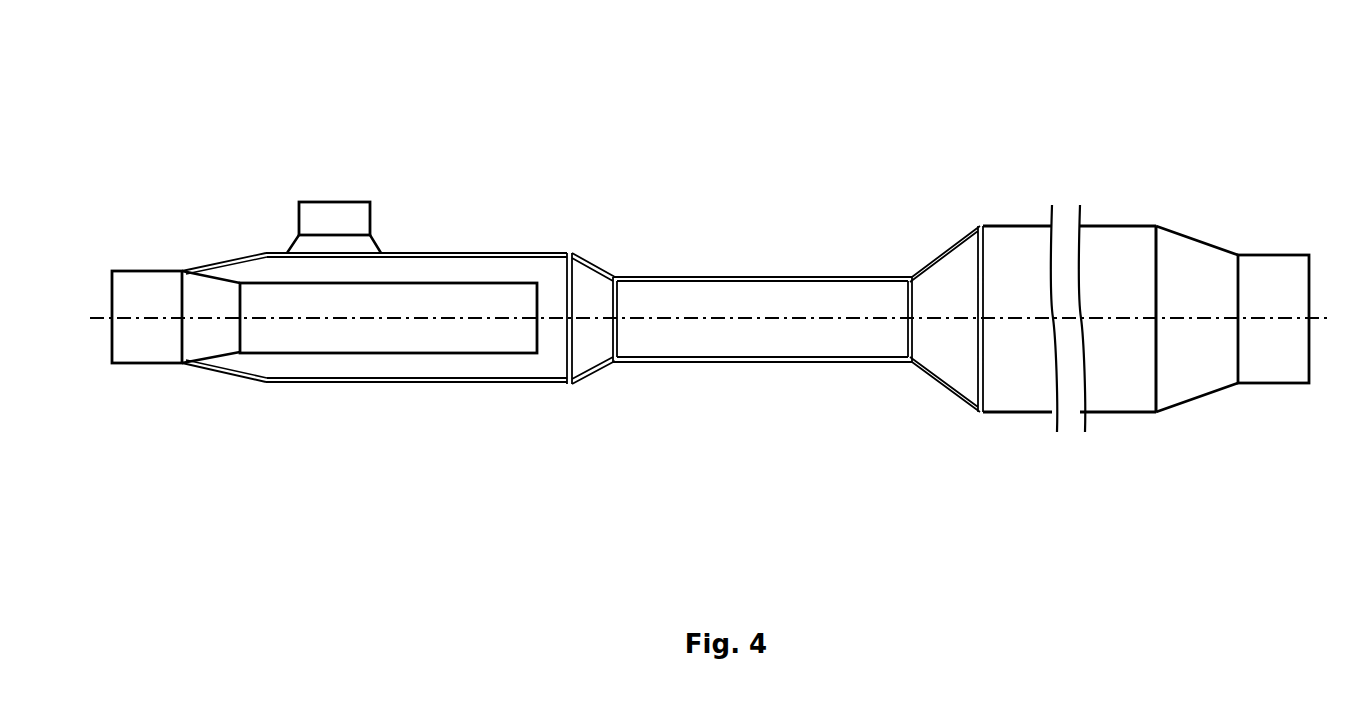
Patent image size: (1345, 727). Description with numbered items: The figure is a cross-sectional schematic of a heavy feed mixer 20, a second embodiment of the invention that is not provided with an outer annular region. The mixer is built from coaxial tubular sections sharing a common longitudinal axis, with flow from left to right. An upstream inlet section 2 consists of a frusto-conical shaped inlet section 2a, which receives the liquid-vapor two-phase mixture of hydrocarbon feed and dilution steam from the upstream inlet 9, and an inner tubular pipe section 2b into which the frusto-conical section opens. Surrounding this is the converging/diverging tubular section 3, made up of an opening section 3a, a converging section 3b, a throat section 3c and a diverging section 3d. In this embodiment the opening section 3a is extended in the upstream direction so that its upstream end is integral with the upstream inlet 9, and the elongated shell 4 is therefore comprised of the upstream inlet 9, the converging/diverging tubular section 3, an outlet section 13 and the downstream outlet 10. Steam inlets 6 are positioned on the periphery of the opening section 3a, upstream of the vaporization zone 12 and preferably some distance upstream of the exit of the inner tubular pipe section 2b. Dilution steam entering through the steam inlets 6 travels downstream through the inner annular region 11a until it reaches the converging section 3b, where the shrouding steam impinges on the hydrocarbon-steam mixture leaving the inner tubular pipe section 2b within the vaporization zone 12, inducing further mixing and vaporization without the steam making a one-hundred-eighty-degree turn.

The heavy feed mixer 20 is at (852, 56).
The upstream inlet section 2 is at (185, 262).
The frusto-conical shaped inlet section 2a is at (230, 368).
The inner tubular pipe section 2b is at (435, 271).
The steam inlet 6 is at (310, 192).
The inner annular region 11a is at (502, 269).
The vaporization zone 12 is at (593, 287).
The converging/diverging tubular section 3 is at (982, 418).
The opening section 3a is at (482, 395).
The converging section 3b is at (600, 387).
The throat section 3c is at (693, 265).
The diverging section 3d is at (944, 239).
The outlet section 13 is at (1239, 243).
The upstream inlet 9 is at (112, 368).
The downstream outlet 10 is at (1309, 388).
The elongated shell 4 is at (112, 392).